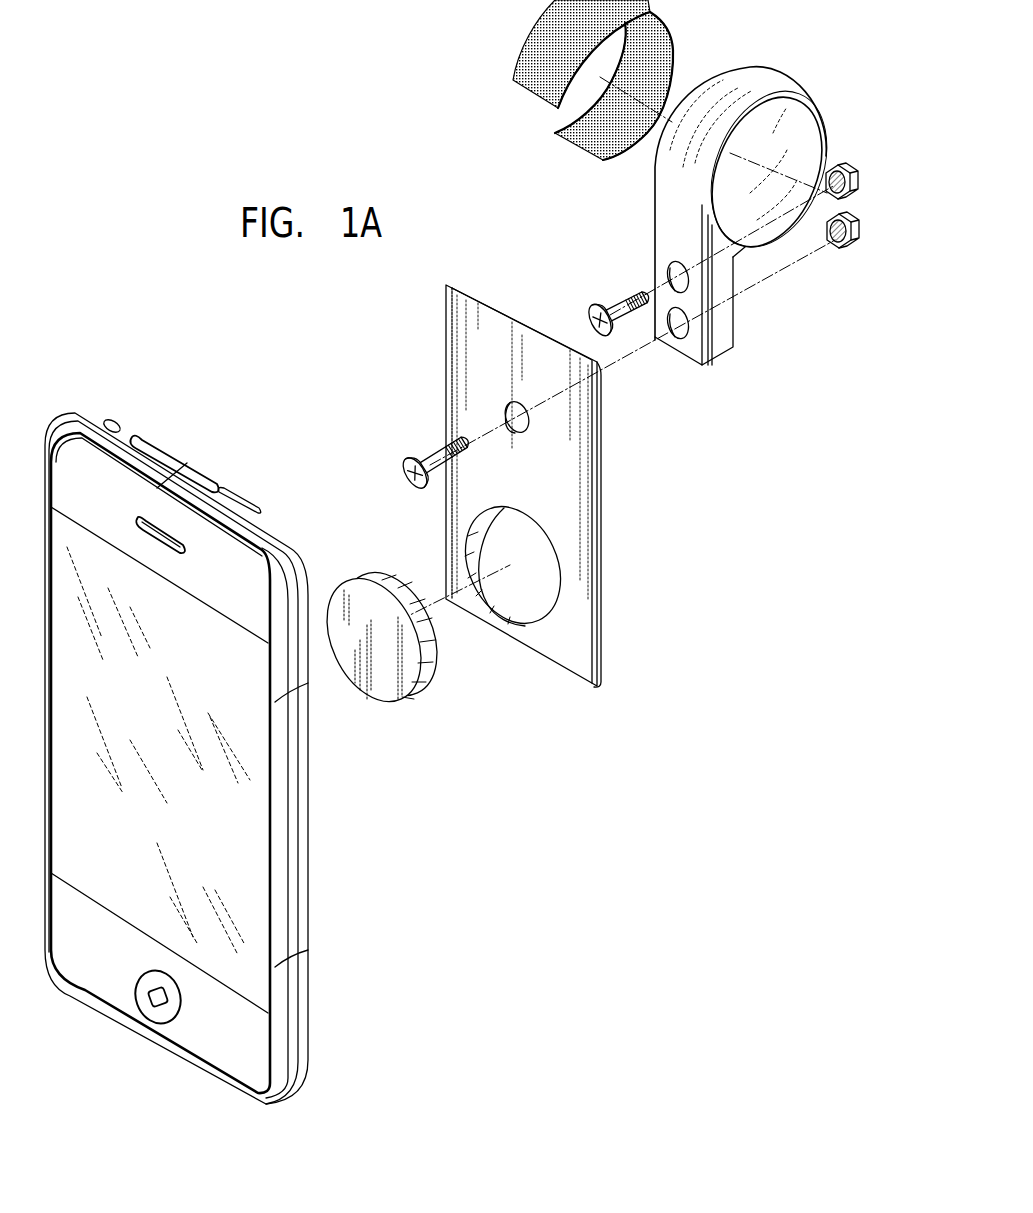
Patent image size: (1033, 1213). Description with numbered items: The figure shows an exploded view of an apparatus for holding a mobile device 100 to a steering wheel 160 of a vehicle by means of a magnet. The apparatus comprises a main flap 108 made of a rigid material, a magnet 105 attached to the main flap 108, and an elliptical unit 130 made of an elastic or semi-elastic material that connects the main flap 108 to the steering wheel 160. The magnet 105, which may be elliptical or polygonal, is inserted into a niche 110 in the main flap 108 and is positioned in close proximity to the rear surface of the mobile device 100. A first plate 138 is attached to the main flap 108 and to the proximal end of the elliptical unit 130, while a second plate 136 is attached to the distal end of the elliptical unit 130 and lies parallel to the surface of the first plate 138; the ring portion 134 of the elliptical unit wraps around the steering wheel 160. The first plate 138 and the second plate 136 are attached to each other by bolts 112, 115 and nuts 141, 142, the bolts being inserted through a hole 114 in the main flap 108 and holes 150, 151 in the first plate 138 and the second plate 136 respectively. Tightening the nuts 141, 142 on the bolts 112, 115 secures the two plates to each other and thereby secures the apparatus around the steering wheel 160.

The mobile device 100 is at (308, 890).
The magnet 105 is at (390, 688).
The main flap 108 is at (557, 665).
The niche 110 is at (545, 575).
The bolt 112 is at (405, 462).
The hole 114 is at (505, 412).
The bolt 115 is at (612, 306).
The elliptical unit 130 is at (725, 218).
The ring portion of clamp 134 is at (750, 232).
The second plate 136 is at (720, 340).
The first plate 138 is at (693, 352).
The nut 141 is at (850, 168).
The nut 142 is at (845, 247).
The hole 150 is at (670, 265).
The hole 151 is at (674, 335).
The steering wheel 160 is at (527, 58).